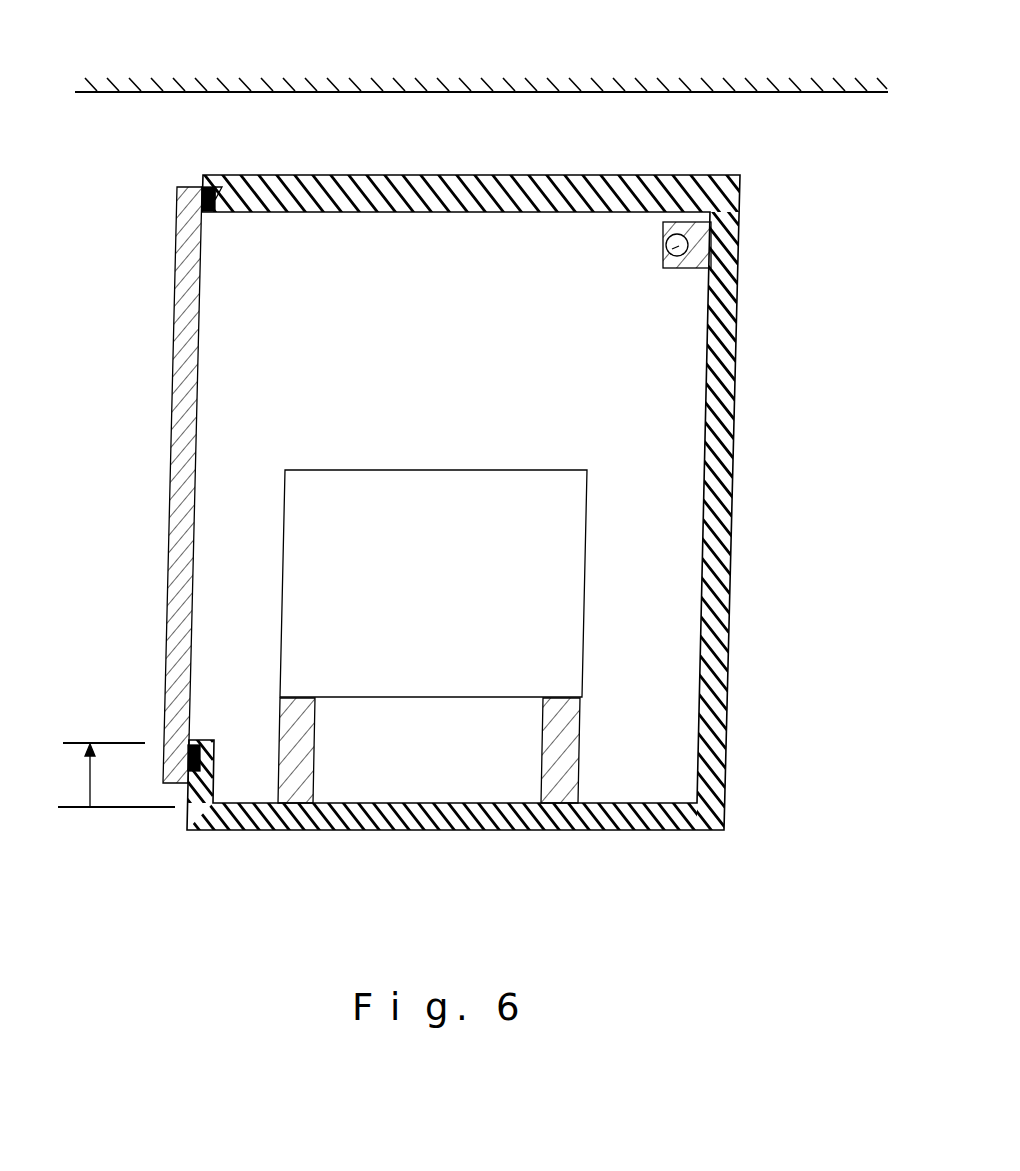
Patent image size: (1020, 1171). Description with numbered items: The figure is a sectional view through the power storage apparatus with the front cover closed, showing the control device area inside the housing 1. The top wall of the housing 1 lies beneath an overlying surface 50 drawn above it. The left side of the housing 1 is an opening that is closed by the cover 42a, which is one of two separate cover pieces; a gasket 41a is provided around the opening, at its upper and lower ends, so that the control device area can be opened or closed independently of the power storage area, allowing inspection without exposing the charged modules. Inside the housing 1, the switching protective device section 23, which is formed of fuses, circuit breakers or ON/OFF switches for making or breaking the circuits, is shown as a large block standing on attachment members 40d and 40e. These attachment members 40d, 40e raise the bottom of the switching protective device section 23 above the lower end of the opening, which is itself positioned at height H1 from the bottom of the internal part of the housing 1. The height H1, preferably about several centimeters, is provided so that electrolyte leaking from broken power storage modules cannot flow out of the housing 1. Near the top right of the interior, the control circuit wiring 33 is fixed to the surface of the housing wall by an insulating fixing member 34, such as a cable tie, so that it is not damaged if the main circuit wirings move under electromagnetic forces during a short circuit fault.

The ceiling 50 is at (641, 90).
The housing 1 is at (500, 175).
The cover 42a is at (177, 228).
The gasket 41a is at (203, 187).
The control circuit wiring 33 is at (672, 248).
The fixing member 34 is at (690, 270).
The switching protective device section 23 is at (436, 470).
The attachment member 40d is at (315, 762).
The attachment member 40e is at (580, 770).
The height H1 is at (112, 775).